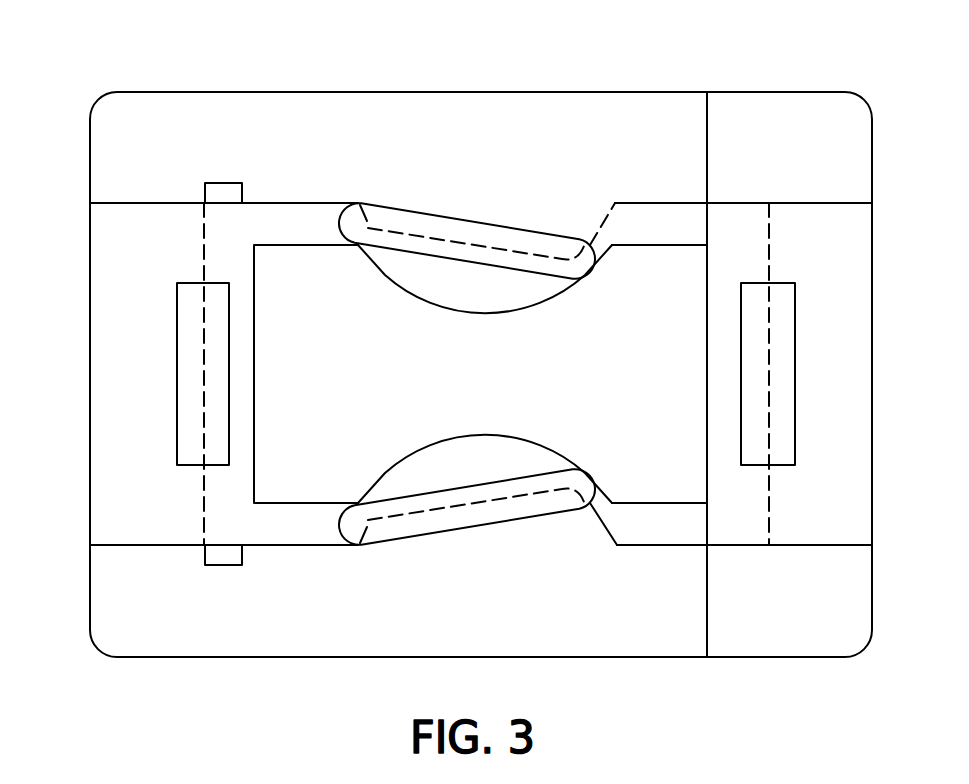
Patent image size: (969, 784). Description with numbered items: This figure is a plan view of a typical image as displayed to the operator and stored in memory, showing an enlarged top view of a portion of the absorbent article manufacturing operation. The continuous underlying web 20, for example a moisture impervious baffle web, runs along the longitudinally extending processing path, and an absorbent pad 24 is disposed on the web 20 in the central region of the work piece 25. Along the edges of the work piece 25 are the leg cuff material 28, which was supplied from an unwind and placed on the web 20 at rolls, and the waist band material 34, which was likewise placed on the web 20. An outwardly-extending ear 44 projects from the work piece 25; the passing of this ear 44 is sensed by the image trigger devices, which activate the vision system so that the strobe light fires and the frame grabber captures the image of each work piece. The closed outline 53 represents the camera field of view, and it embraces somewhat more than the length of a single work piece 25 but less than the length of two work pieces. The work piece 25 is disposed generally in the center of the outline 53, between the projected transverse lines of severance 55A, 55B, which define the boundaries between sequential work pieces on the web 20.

The underlying web 20 is at (302, 520).
The absorbent pad 24 is at (424, 370).
The work piece 25 is at (742, 198).
The leg cuff material 28 is at (488, 515).
The waist band material 34 is at (177, 440).
The outwardly-extending ear 44 is at (224, 183).
The closed outline 53 is at (750, 92).
The projected transverse line of severance 55A is at (769, 241).
The projected transverse line of severance 55B is at (203, 272).